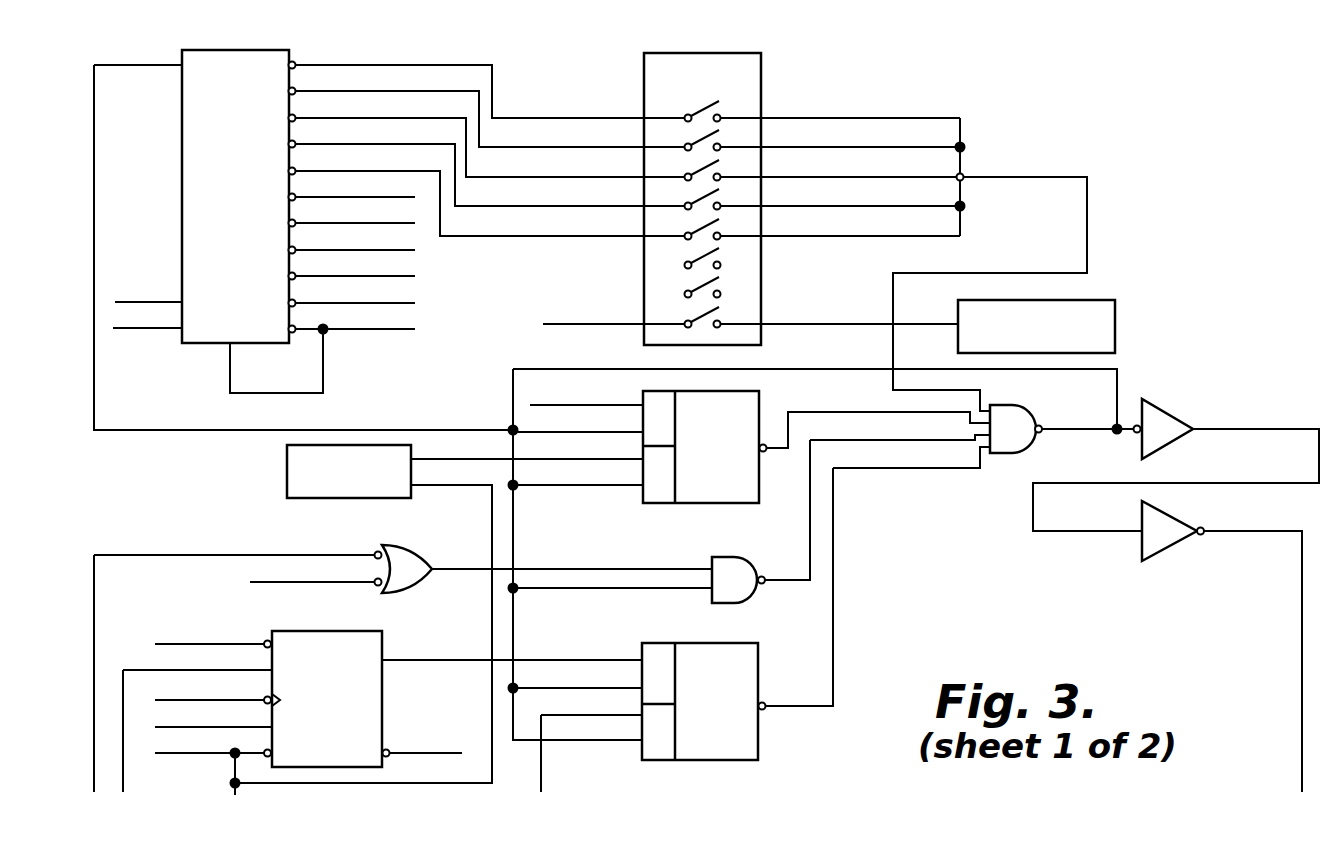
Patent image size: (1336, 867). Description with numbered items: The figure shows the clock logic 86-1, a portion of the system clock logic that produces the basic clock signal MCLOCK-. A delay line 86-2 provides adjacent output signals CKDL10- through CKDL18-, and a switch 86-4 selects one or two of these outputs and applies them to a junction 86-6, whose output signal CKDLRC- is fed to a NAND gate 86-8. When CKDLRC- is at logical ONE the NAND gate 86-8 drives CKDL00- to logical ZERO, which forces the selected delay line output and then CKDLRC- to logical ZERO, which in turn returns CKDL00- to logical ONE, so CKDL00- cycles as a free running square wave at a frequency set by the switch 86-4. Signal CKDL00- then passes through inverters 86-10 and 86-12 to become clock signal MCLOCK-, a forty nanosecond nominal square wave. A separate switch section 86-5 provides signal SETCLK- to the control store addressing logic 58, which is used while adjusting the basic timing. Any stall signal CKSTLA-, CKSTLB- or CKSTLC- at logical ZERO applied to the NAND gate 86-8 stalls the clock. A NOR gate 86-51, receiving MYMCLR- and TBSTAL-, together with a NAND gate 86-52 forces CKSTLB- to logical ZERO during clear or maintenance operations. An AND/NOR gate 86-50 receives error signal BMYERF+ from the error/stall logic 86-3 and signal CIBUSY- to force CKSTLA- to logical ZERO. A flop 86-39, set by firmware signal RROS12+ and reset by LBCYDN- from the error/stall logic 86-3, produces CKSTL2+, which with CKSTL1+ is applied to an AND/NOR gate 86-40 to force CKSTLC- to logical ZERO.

The clock logic 86-1 is at (704, 418).
The delay line 86-2 is at (248, 50).
The error/stall logic 86-3 is at (287, 468).
The switch 86-4 is at (751, 184).
The switch section (SETCLK) 86-5 is at (715, 308).
The junction 86-6 is at (963, 181).
The NAND gate 86-8 is at (1028, 451).
The inverter 86-10 is at (1168, 406).
The inverter 86-12 is at (1172, 546).
The flop 86-39 is at (302, 631).
The AND/NOR gate 86-40 is at (760, 736).
The AND/NOR gate 86-50 is at (732, 504).
The NOR gate 86-51 is at (418, 590).
The NAND gate 86-52 is at (752, 600).
The control store addressing logic 58 is at (1115, 316).